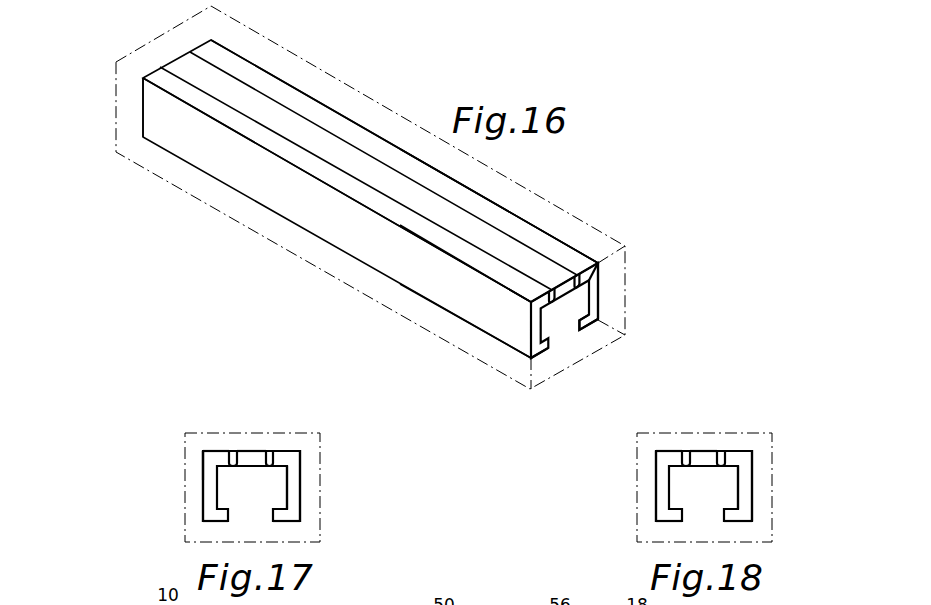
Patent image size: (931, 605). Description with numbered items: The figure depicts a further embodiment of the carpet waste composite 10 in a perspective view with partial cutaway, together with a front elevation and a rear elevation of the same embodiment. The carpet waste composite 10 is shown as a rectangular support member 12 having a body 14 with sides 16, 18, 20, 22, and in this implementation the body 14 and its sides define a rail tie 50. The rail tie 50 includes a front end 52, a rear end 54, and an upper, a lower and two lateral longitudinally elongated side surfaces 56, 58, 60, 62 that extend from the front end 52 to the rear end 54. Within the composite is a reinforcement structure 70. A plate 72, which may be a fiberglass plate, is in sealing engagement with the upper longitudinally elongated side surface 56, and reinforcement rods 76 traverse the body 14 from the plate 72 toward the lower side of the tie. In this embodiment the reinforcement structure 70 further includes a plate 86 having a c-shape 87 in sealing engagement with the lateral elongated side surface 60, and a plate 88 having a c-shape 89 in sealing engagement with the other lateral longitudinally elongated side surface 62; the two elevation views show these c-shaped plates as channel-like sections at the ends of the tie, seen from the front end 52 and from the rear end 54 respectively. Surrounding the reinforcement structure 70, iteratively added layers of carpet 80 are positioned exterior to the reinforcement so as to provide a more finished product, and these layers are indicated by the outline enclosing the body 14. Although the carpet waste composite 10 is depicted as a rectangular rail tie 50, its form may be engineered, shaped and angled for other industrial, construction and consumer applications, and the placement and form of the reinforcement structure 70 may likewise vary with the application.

In FIG. 16, the carpet waste composite 10 is at (432, 102).
In FIG. 17, the carpet waste composite 10 is at (305, 392).
In FIG. 18, the carpet waste composite 10 is at (755, 392).
In FIG. 17, the rectangular support member 12 is at (303, 518).
In FIG. 16, the body 14 is at (395, 185).
In FIG. 17, the body 14 is at (216, 459).
In FIG. 18, the body 14 is at (667, 459).
In FIG. 16, the side 16 is at (547, 237).
In FIG. 17, the side 16 is at (242, 452).
In FIG. 18, the side 16 is at (695, 452).
In FIG. 17, the side 18 is at (300, 458).
In FIG. 18, the side 18 is at (657, 460).
In FIG. 16, the side 20 is at (590, 330).
In FIG. 17, the side 20 is at (293, 523).
In FIG. 18, the side 20 is at (660, 523).
In FIG. 17, the side 22 is at (203, 483).
In FIG. 16, the rail tie 50 is at (370, 130).
In FIG. 17, the rail tie 50 is at (213, 445).
In FIG. 18, the rail tie 50 is at (660, 445).
In FIG. 16, the front end 52 is at (578, 322).
In FIG. 16, the rear end 54 is at (143, 100).
In FIG. 16, the upper longitudinally elongated side surface 56 is at (525, 220).
In FIG. 17, the upper longitudinally elongated side surface 56 is at (257, 452).
In FIG. 18, the upper longitudinally elongated side surface 56 is at (710, 452).
In FIG. 16, the lower longitudinally elongated side surface 58 is at (565, 342).
In FIG. 17, the lower longitudinally elongated side surface 58 is at (210, 523).
In FIG. 18, the lower longitudinally elongated side surface 58 is at (747, 523).
In FIG. 16, the lateral longitudinally elongated side surface 60 is at (600, 263).
In FIG. 17, the lateral longitudinally elongated side surface 60 is at (300, 478).
In FIG. 18, the lateral longitudinally elongated side surface 60 is at (657, 478).
In FIG. 16, the lateral longitudinally elongated side surface 62 is at (515, 340).
In FIG. 17, the lateral longitudinally elongated side surface 62 is at (205, 468).
In FIG. 18, the lateral longitudinally elongated side surface 62 is at (752, 460).
In FIG. 16, the reinforcement structure 70 is at (237, 155).
In FIG. 17, the reinforcement structure 70 is at (200, 513).
In FIG. 18, the reinforcement structure 70 is at (742, 483).
In FIG. 16, the plate 72 is at (477, 247).
In FIG. 16, the reinforcement rods 76 is at (318, 140).
In FIG. 16, the layers of carpet 80 is at (512, 180).
In FIG. 17, the layers of carpet 80 is at (320, 438).
In FIG. 18, the layers of carpet 80 is at (704, 487).
In FIG. 16, the plate 86 is at (600, 287).
In FIG. 17, the plate 86 is at (293, 497).
In FIG. 18, the plate 86 is at (660, 505).
In FIG. 17, the c-shape 87 is at (267, 452).
In FIG. 18, the c-shape 87 is at (687, 458).
In FIG. 16, the plate 88 is at (458, 293).
In FIG. 17, the plate 88 is at (210, 460).
In FIG. 18, the plate 88 is at (750, 502).
In FIG. 17, the c-shape 89 is at (233, 458).
In FIG. 18, the c-shape 89 is at (722, 458).